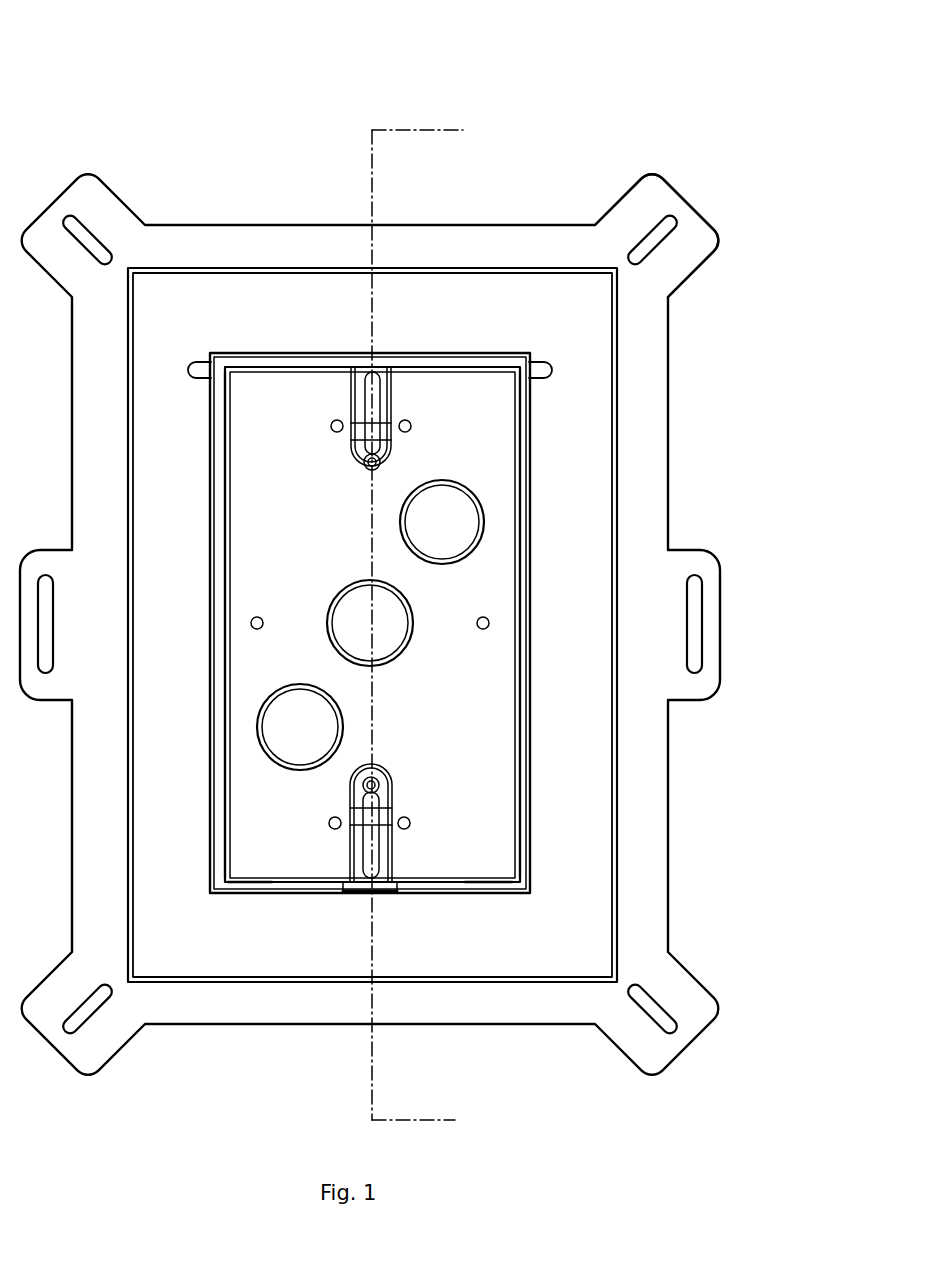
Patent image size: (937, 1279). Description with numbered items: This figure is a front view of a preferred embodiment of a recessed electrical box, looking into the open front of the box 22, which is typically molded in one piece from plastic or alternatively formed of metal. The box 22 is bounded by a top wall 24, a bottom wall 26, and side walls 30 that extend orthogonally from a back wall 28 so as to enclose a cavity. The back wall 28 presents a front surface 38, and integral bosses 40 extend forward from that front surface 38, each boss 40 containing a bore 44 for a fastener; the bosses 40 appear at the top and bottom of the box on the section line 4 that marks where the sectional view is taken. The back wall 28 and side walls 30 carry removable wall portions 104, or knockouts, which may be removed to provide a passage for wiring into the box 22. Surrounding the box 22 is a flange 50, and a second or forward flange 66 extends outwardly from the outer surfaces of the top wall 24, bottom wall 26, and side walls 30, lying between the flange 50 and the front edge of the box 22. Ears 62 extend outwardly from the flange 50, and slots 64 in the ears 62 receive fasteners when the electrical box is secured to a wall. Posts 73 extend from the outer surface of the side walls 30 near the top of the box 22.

The box 22 is at (230, 172).
The section line 4- 4 is at (432, 619).
The top wall 24 is at (433, 355).
The bottom wall 26 is at (288, 882).
The back wall 28 is at (473, 452).
The side walls 30 is at (220, 571).
The front surface 38 is at (292, 432).
The bosses 40 is at (394, 423).
The bores 44 is at (367, 464).
The flange 50 is at (658, 412).
The ears 62 is at (722, 240).
The slots 64 is at (657, 240).
The second flange 66 is at (584, 672).
The posts 73 is at (199, 378).
The removable wall portions 104 is at (462, 533).